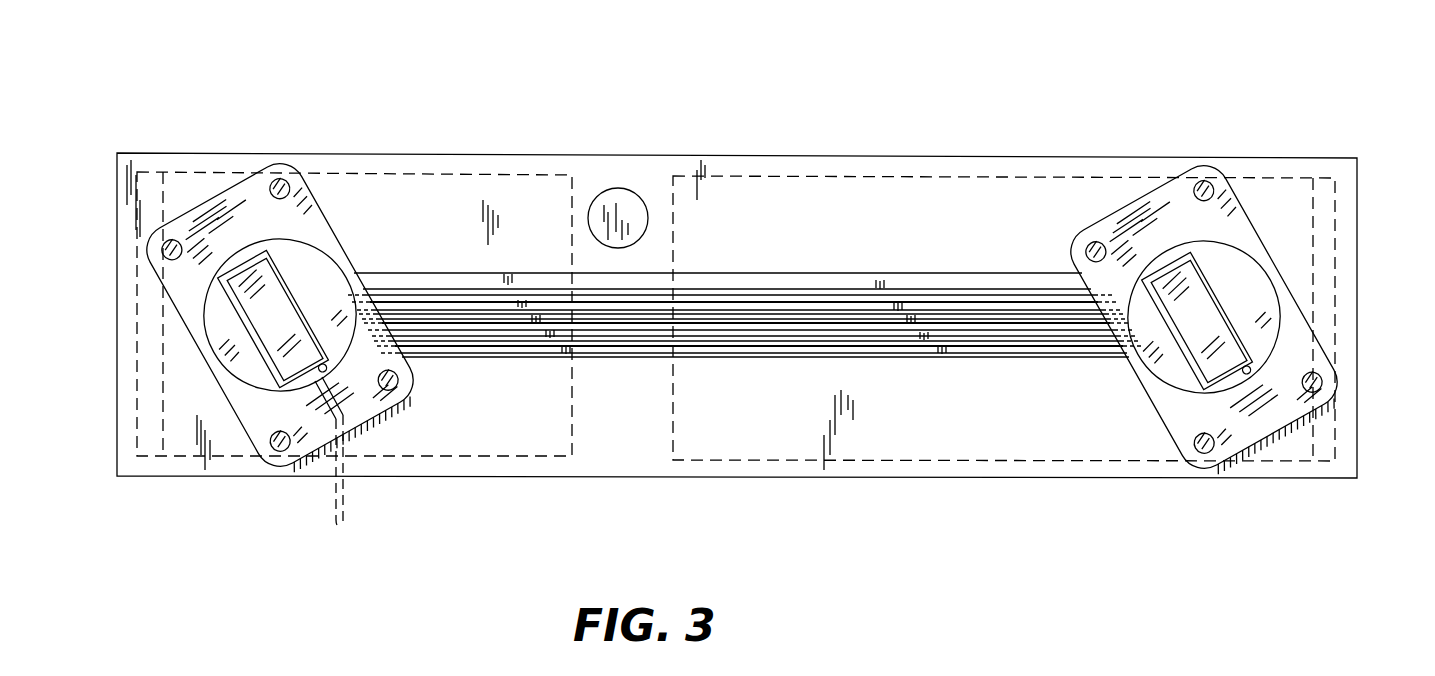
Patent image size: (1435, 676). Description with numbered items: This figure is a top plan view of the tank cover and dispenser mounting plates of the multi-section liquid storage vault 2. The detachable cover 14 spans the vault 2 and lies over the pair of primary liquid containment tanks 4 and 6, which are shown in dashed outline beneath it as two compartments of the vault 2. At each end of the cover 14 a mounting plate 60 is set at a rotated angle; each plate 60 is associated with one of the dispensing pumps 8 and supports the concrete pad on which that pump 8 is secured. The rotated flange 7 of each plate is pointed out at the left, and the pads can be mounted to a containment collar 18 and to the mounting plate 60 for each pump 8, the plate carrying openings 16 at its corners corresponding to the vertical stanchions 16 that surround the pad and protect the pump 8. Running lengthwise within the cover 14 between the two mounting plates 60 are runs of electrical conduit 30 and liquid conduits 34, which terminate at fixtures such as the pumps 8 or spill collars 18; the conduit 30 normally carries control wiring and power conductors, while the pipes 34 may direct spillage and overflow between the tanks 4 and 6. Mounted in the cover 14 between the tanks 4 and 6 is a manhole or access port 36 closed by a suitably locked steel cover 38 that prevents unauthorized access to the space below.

The vault 2 is at (1076, 98).
The primary liquid containment tank 4 is at (382, 170).
The primary liquid containment tank 6 is at (846, 176).
The flange 7 is at (240, 187).
The dispensing pump 8 is at (235, 281).
The detachable cover 14 is at (442, 157).
The vertical stanchion 16 is at (288, 183).
The containment collar 18 is at (207, 338).
The electrical conduit 30 is at (826, 273).
The liquid conduit 34 is at (747, 346).
The access port 36 is at (611, 189).
The steel cover 38 is at (627, 203).
The mounting plate 60 is at (220, 318).